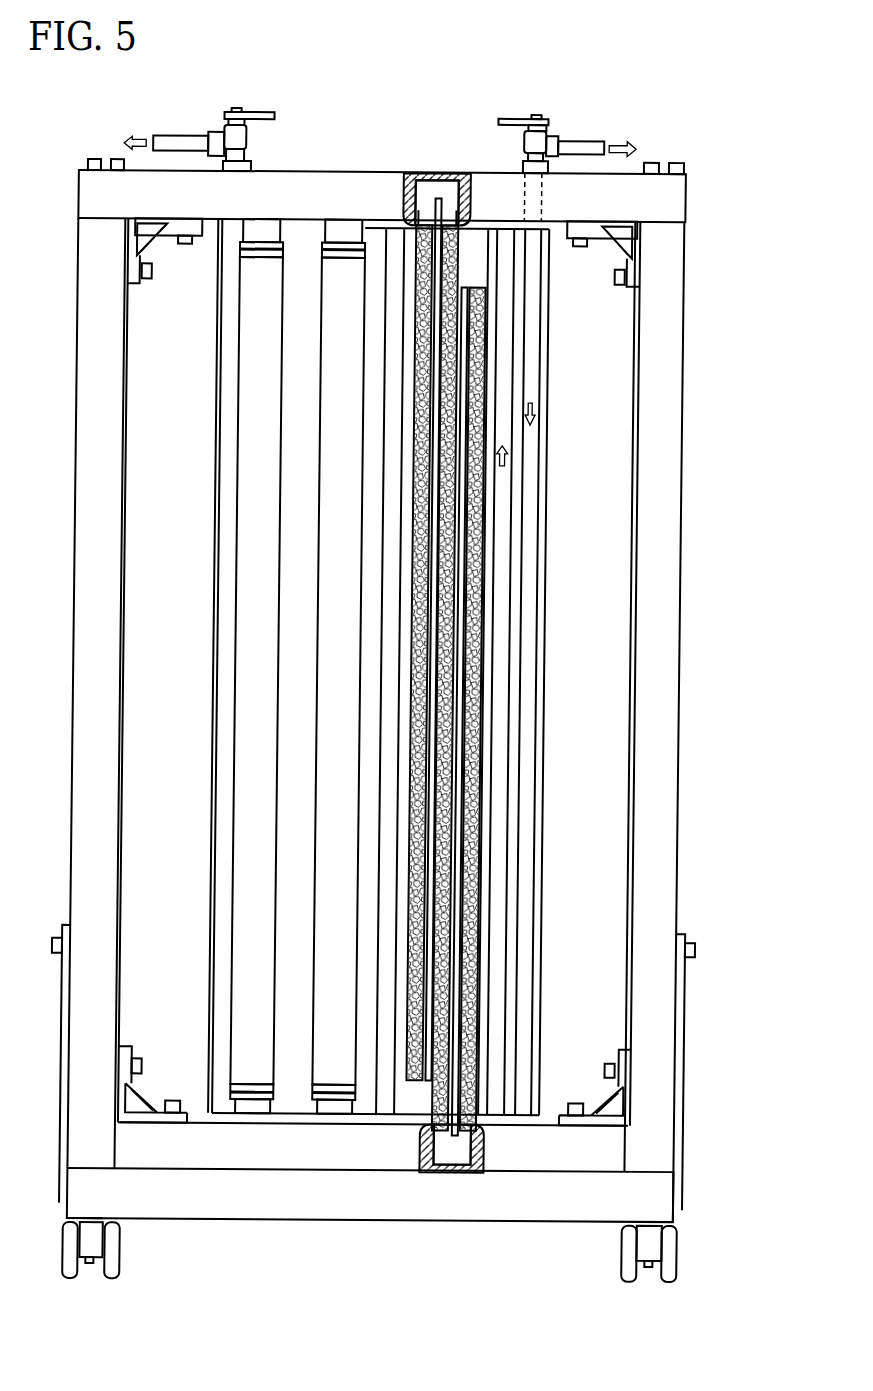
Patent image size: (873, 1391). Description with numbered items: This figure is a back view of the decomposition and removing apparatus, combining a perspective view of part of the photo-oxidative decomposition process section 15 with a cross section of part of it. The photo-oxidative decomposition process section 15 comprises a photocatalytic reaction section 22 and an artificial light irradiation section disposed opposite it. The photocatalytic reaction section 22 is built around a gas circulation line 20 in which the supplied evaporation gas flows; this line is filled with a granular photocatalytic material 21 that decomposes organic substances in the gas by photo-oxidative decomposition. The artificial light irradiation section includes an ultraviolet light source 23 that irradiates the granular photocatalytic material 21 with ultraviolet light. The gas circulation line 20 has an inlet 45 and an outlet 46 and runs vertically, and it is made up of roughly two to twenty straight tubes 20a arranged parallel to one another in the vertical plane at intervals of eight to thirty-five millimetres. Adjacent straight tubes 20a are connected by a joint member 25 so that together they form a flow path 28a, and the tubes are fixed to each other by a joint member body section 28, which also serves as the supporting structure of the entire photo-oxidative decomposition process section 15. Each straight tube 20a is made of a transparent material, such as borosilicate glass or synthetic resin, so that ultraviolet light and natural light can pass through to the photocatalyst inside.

The photo-oxidative decomposition process section 15 is at (713, 298).
The gas circulation line 20 is at (500, 1056).
The straight tube 20a is at (504, 1090).
The granular photocatalytic material 21 is at (410, 1028).
The photocatalytic reaction section 22 is at (414, 980).
The ultraviolet light source 23 is at (340, 280).
The joint member 25 is at (429, 205).
The joint member body section 28 is at (448, 176).
The flow path 28a is at (446, 192).
The inlet 45 is at (544, 146).
The outlet 46 is at (210, 138).